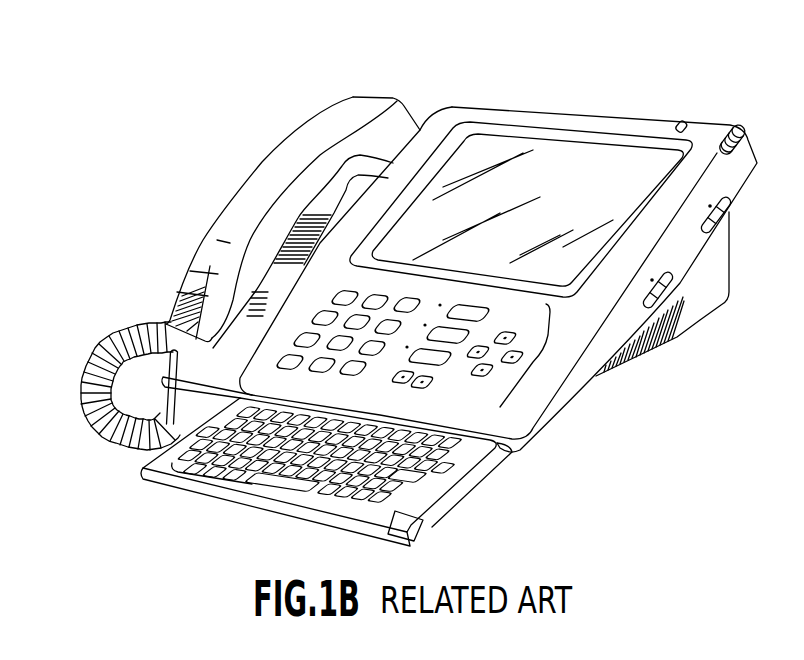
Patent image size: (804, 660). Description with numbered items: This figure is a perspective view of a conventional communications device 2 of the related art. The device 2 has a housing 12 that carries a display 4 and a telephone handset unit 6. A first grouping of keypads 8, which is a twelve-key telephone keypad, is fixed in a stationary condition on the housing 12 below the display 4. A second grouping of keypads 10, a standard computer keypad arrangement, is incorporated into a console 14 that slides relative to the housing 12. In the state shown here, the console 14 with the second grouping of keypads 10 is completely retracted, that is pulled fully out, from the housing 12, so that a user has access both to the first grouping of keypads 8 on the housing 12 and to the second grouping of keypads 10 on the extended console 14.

The conventional communications device 2 is at (576, 95).
The display 4 is at (628, 163).
The telephone handset unit 6 is at (224, 222).
The first grouping of keypads 8 is at (538, 357).
The second grouping of keypads 10 is at (275, 497).
The housing 12 is at (449, 116).
The console 14 is at (465, 477).